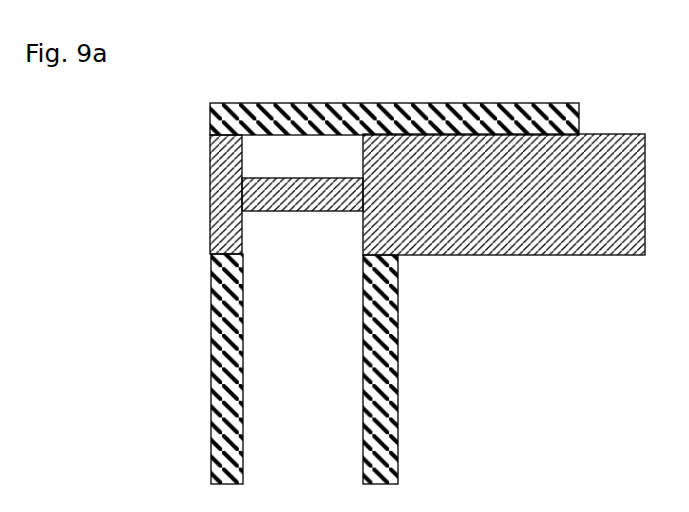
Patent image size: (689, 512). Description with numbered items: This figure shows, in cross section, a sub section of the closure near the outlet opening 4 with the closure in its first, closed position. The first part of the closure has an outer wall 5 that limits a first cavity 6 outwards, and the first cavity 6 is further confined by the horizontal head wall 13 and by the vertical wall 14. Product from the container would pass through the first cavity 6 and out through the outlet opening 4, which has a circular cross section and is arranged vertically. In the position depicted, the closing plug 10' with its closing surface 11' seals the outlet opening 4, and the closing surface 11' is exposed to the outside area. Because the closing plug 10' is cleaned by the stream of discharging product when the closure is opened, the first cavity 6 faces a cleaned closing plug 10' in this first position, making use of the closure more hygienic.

The horizontal head wall 13 is at (466, 118).
The closing plug 10' is at (437, 132).
The closing surface 11' is at (169, 194).
The outlet opening 4 is at (222, 248).
The outer wall 5 is at (218, 310).
The first cavity 6 is at (302, 355).
The vertical wall 14 is at (382, 403).